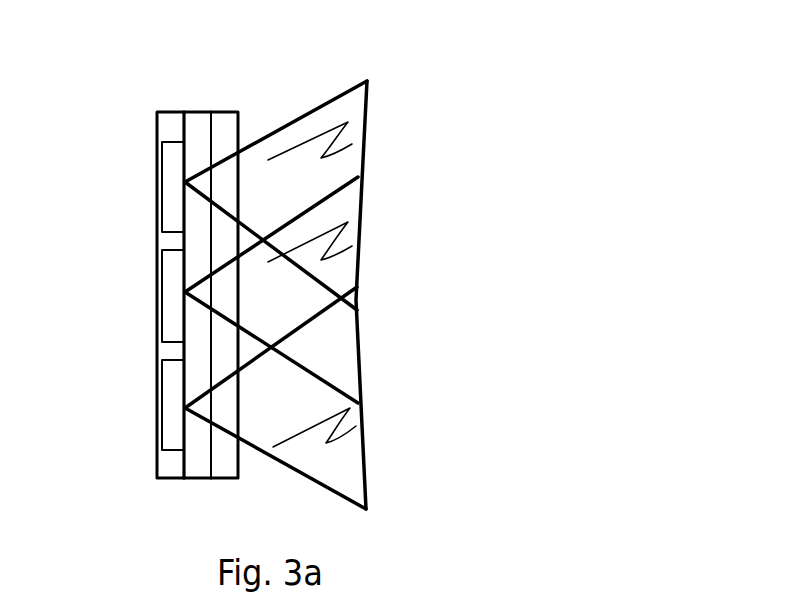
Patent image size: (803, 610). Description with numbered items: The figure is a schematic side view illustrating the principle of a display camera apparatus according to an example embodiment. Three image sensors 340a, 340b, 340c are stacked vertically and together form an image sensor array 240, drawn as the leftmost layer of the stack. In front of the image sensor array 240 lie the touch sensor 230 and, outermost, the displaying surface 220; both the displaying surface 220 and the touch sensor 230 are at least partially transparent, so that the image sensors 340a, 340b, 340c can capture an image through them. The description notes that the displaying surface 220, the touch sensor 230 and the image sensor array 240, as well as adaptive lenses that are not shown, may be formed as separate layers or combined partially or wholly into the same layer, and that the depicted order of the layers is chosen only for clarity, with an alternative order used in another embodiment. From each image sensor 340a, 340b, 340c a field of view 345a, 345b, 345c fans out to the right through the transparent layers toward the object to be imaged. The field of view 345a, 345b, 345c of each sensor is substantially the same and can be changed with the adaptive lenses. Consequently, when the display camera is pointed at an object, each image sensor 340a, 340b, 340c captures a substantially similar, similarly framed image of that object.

The displaying surface 220 is at (230, 121).
The touch sensor 230 is at (194, 122).
The image sensor array 240 is at (169, 121).
The image sensor 340a is at (172, 197).
The image sensor 340b is at (172, 298).
The image sensor 340c is at (172, 413).
The field of view 345a is at (350, 150).
The field of view 345b is at (352, 245).
The field of view 345c is at (353, 432).